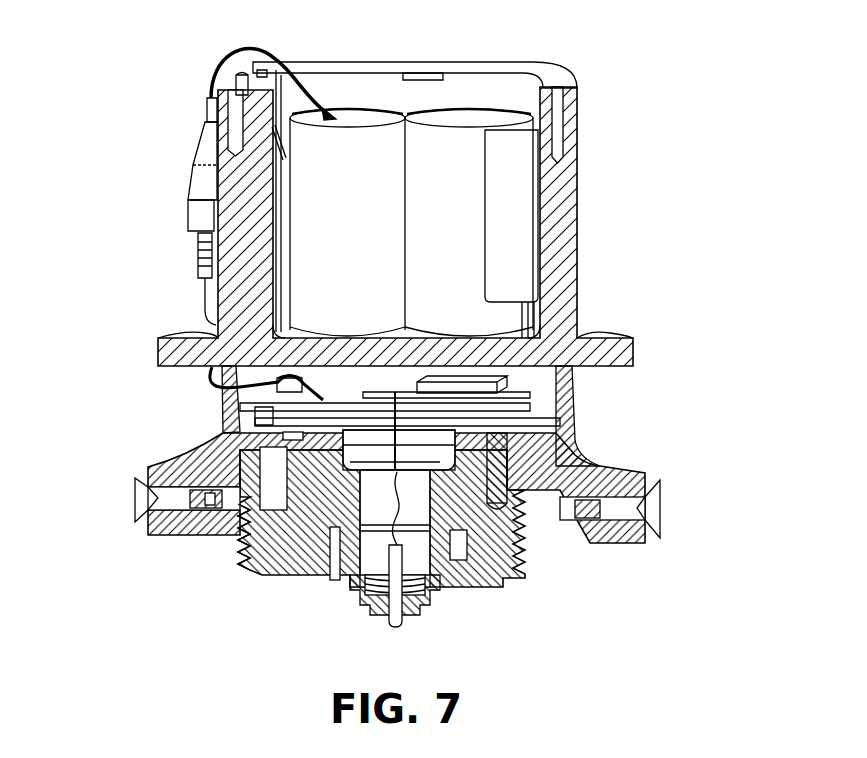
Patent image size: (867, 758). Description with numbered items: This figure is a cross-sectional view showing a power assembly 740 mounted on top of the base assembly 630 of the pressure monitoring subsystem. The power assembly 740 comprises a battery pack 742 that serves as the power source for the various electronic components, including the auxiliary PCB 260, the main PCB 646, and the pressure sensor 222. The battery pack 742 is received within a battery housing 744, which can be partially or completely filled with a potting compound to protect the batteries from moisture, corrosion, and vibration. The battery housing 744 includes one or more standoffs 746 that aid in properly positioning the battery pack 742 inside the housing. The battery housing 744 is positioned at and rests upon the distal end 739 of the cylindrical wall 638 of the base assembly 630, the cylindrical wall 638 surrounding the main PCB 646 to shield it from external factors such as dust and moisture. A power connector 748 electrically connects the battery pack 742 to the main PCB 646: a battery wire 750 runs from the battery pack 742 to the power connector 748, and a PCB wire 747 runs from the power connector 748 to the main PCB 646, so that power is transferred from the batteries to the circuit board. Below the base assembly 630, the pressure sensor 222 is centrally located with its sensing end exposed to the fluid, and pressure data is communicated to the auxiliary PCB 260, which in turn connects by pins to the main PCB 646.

The power assembly 740 is at (627, 146).
The battery housing 744 is at (524, 72).
The battery pack 742 is at (448, 248).
The battery wire 750 is at (213, 60).
The standoffs 746 is at (275, 127).
The power connector 748 is at (190, 232).
The PCB wire 747 is at (207, 374).
The distal end 739 is at (571, 383).
The cylindrical wall 638 is at (574, 413).
The base assembly 630 is at (643, 450).
The main PCB 646 is at (358, 397).
The auxiliary PCB 260 is at (480, 558).
The pressure sensor 222 is at (395, 624).